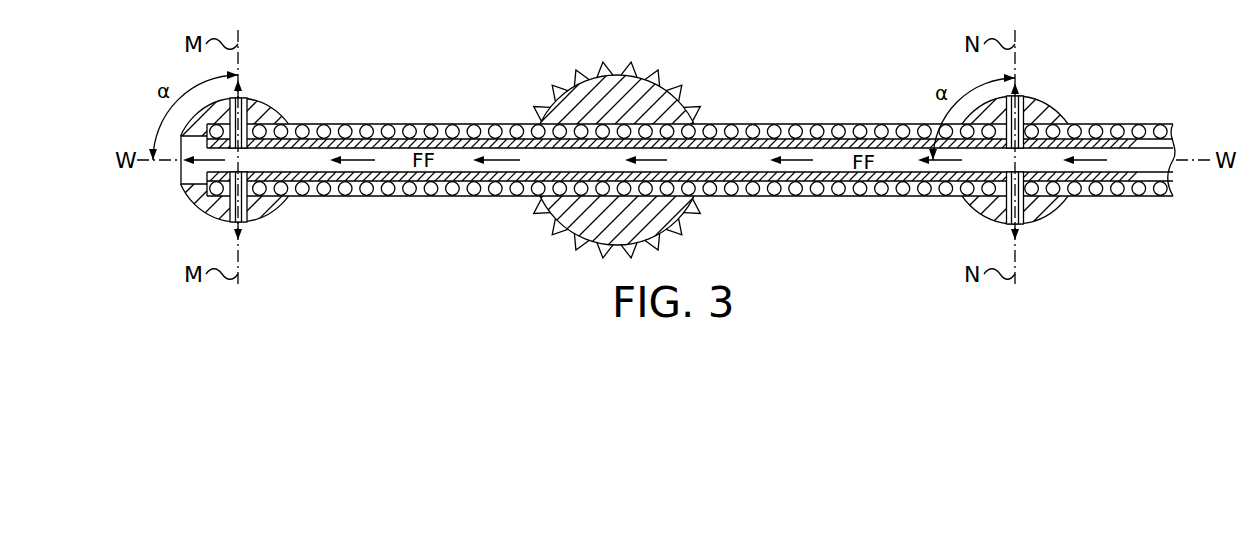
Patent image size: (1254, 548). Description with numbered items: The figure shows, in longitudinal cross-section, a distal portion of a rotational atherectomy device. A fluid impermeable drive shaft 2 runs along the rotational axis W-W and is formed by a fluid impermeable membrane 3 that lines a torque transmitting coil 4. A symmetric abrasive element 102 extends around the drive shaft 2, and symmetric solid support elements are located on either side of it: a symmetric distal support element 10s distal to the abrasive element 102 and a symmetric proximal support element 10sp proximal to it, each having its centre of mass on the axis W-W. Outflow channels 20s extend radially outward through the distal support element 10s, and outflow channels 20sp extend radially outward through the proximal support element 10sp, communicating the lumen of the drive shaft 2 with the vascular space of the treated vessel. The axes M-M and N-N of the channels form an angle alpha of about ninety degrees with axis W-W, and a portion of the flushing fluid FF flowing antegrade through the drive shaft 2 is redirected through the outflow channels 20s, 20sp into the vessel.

The drive shaft 2 is at (395, 112).
The fluid impermeable membrane 3 is at (467, 168).
The torque transmitting coil 4 is at (408, 189).
The symmetric abrasive element 102 is at (675, 66).
The symmetric distal support element 10s is at (196, 220).
The outflow channels 20s is at (251, 212).
The symmetric proximal support element 10sp is at (967, 220).
The outflow channels 20sp is at (1029, 212).